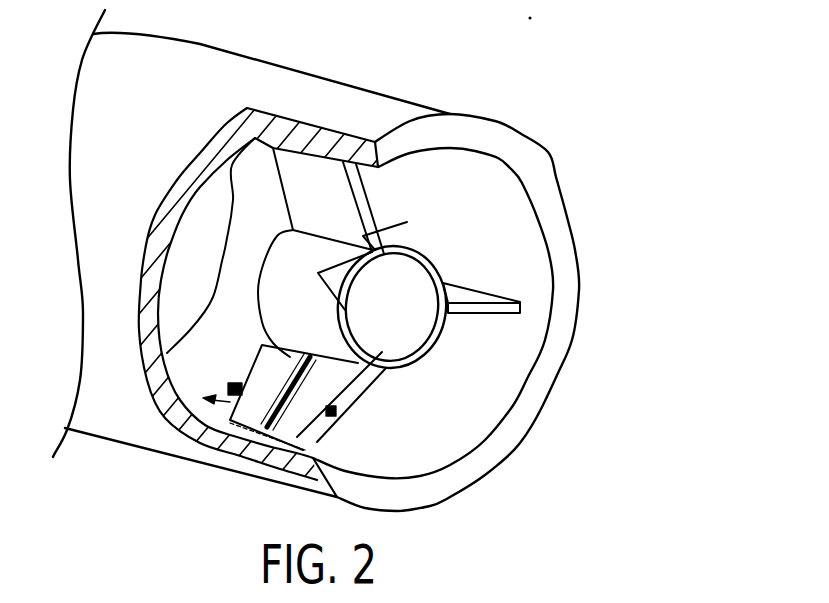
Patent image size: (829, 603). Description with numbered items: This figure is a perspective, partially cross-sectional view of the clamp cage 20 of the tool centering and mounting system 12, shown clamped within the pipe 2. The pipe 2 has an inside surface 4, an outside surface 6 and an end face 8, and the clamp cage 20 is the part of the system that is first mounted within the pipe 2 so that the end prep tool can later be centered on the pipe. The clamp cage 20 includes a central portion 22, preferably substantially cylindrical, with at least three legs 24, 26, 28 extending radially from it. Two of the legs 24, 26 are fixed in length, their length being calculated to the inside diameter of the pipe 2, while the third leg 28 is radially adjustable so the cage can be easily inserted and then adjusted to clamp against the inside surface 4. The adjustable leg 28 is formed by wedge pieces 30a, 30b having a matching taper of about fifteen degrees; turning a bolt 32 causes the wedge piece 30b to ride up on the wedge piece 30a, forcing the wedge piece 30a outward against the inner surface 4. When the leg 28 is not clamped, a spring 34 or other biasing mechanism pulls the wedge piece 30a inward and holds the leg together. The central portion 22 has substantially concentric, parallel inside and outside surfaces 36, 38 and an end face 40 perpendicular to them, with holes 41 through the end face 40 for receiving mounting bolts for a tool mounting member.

The pipe 2 is at (228, 53).
The inside surface 4 is at (414, 448).
The outside surface 6 is at (342, 80).
The end face 8 is at (507, 154).
The tool centering and mounting system 12 is at (624, 216).
The clamp cage 20 is at (470, 378).
The central portion 22 is at (277, 290).
The leg 24 is at (375, 212).
The leg 26 is at (468, 314).
The radially adjustable leg 28 is at (396, 366).
The wedge piece 30a is at (317, 445).
The wedge piece 30b is at (231, 404).
The bolt 32 is at (340, 414).
The spring 34 is at (300, 358).
The inside surface 36 is at (422, 291).
The outside surface 38 is at (298, 252).
The end face 40 is at (435, 242).
The holes 41 is at (330, 281).